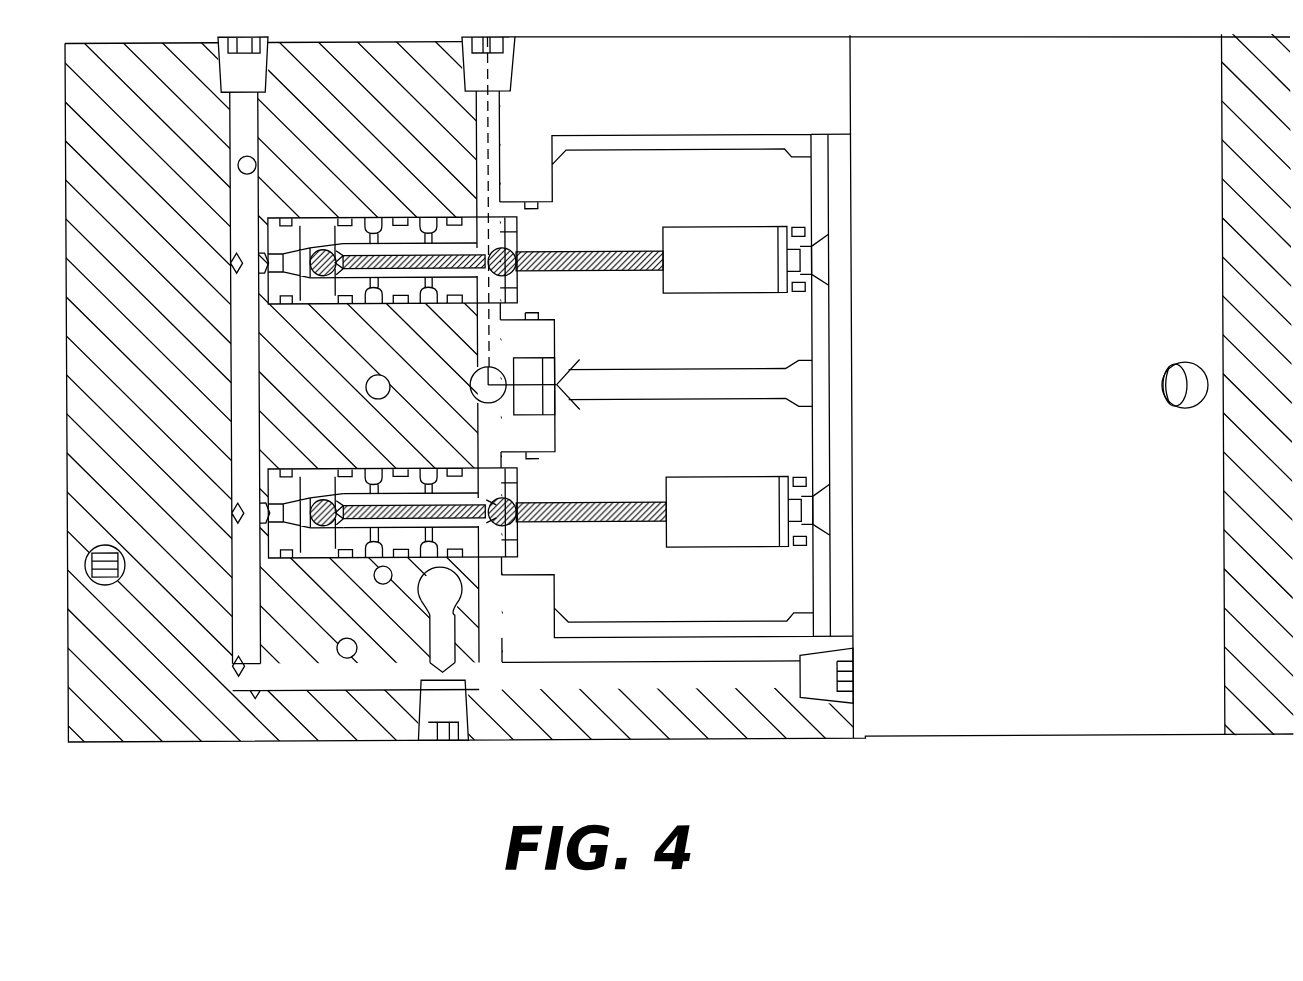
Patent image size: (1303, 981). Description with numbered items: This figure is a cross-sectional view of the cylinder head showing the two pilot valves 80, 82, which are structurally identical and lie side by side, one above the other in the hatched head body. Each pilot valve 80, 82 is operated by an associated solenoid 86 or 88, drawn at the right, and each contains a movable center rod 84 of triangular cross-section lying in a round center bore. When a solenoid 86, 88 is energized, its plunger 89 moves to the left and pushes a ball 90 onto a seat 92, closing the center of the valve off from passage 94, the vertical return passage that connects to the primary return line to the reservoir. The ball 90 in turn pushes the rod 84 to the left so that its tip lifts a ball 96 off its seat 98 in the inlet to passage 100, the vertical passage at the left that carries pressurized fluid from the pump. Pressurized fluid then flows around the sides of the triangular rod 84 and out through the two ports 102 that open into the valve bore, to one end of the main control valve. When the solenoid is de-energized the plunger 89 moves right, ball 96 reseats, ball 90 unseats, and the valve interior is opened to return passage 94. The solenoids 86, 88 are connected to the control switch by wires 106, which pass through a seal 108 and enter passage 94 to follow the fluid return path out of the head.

The pilot valve 80 is at (295, 584).
The pilot valve 82 is at (293, 337).
The center rod 84 is at (351, 257).
The solenoid 86 is at (734, 513).
The solenoid 88 is at (734, 243).
The plunger 89 is at (590, 256).
The ball 90 is at (499, 260).
The seat 92 is at (504, 527).
The passage 94 is at (492, 121).
The ball 96 is at (319, 264).
The seat 98 is at (336, 252).
The passage 100 is at (242, 147).
The ports 102 is at (370, 210).
The wires 106 is at (507, 76).
The seal 108 is at (527, 375).